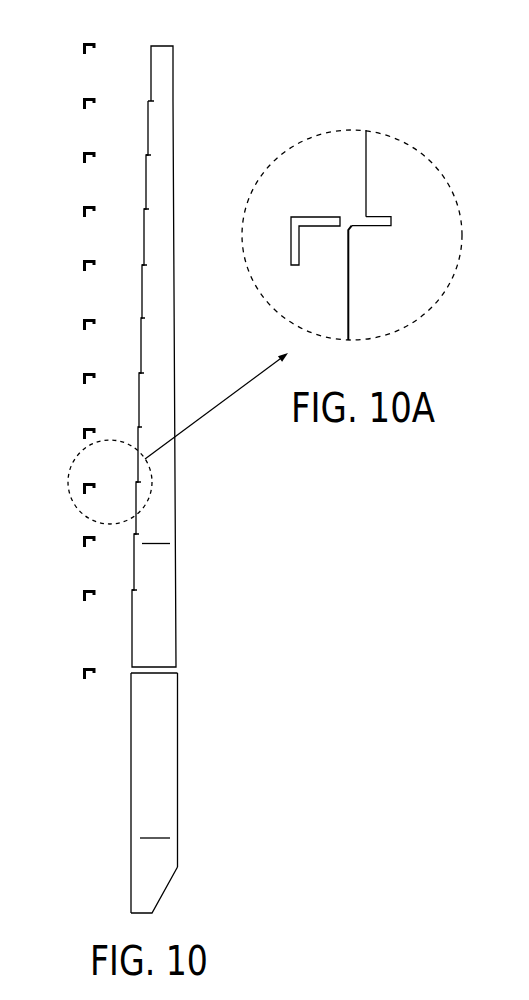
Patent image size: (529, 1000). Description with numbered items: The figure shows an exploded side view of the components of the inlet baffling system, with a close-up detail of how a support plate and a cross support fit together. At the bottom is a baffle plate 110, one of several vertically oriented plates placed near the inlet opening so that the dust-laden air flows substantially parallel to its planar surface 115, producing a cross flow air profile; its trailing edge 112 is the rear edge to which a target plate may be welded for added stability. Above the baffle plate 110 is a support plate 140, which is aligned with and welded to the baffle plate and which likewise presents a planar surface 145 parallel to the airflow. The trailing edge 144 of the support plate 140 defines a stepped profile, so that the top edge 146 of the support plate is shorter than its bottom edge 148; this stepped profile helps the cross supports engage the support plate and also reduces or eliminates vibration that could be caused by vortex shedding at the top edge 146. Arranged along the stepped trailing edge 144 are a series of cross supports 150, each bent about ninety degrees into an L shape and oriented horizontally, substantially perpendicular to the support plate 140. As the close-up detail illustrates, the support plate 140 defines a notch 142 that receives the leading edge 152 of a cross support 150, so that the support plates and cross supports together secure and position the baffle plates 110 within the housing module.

In FIG. 10, the baffle plate 110 is at (165, 768).
In FIG. 10, the trailing edge 112 is at (132, 830).
In FIG. 10, the planar surface 115 is at (156, 828).
In FIG. 10, the support plate 140 is at (162, 562).
In FIG. 10A, the support plate 140 is at (392, 277).
In FIG. 10A, the notch 142 is at (382, 217).
In FIG. 10, the trailing edge 144 is at (145, 180).
In FIG. 10, the planar surface 145 is at (158, 533).
In FIG. 10, the top edge 146 is at (160, 45).
In FIG. 10, the bottom edge 148 is at (155, 667).
In FIG. 10, the cross support 150 is at (82, 262).
In FIG. 10A, the cross support 150 is at (313, 220).
In FIG. 10A, the leading edge 152 is at (346, 222).